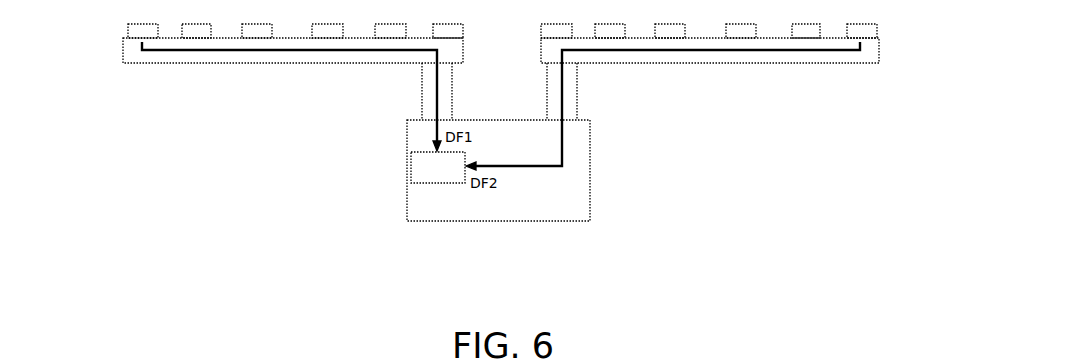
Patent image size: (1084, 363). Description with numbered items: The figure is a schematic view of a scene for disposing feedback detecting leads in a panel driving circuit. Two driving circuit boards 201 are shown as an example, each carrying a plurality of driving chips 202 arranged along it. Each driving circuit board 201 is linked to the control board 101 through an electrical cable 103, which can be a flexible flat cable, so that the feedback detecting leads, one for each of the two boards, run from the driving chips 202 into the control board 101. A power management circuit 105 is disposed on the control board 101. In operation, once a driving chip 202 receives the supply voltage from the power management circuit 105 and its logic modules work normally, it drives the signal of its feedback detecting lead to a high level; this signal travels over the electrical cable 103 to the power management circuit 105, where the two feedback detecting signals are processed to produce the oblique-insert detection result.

The control board 101 is at (508, 222).
The electrical cable 103 is at (432, 93).
The power management circuit 105 is at (440, 173).
The driving circuit board 201 is at (252, 63).
The driving chip 202 is at (147, 32).